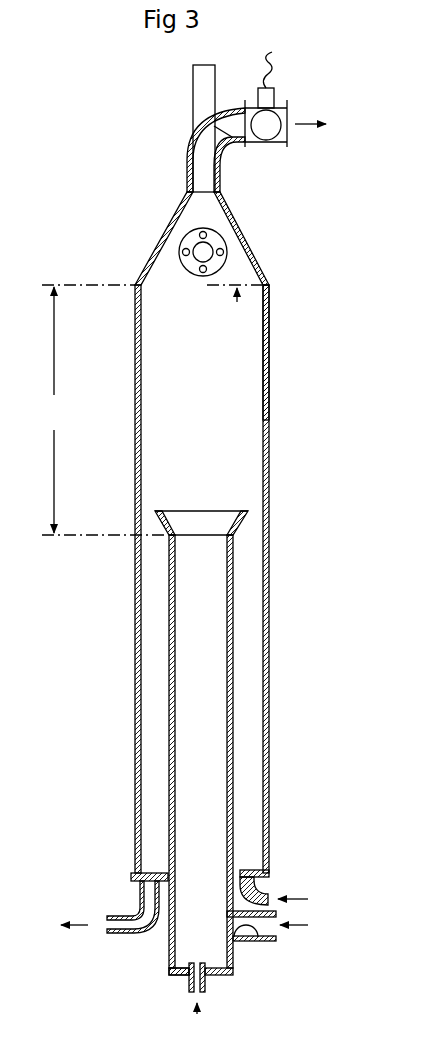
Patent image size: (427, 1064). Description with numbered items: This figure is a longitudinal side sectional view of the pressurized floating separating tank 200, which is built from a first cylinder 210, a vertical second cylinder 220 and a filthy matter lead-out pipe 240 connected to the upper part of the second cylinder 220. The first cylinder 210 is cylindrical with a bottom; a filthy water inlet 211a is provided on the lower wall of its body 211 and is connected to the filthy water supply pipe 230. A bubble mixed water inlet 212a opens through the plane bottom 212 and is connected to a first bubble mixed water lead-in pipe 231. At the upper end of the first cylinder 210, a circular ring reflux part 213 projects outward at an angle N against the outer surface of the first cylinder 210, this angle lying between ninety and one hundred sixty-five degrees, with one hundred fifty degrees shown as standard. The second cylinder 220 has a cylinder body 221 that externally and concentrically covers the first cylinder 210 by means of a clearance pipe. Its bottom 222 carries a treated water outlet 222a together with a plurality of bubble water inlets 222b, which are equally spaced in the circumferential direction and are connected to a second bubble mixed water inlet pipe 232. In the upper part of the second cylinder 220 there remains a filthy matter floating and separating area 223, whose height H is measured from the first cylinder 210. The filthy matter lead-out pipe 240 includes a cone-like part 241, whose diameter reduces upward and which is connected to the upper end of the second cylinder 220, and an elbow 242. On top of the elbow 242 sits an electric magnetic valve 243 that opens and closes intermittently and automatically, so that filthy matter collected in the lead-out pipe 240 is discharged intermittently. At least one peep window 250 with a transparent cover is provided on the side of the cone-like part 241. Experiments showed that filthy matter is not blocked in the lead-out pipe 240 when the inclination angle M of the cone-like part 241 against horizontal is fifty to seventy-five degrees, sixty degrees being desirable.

The pressurized floating separating tank 200 is at (192, 523).
The first cylinder 210 is at (194, 765).
The body 211 is at (235, 689).
The filthy water inlet 211a is at (252, 940).
The plane bottom 212 is at (160, 975).
The bubble mixed water inlet 212a is at (180, 963).
The circular ring reflux part 213 is at (244, 520).
The second cylinder 220 is at (133, 585).
The cylinder body 221 is at (270, 590).
The bottom 222 is at (235, 840).
The treated water outlet 222a is at (150, 870).
The bubble water inlets 222b is at (243, 864).
The filthy matter floating and separating area 223 is at (262, 351).
The filthy water supply pipe 230 is at (283, 960).
The first bubble mixed water lead-in pipe 231 is at (206, 986).
The second bubble mixed water inlet pipe 232 is at (270, 892).
The filthy matter lead-out pipe 240 is at (212, 227).
The cone-like part 241 is at (242, 228).
The elbow 242 is at (222, 160).
The electric magnetic valve 243 is at (270, 117).
The peep window 250 is at (177, 250).
The height H is at (52, 410).
The inclination angle M is at (244, 273).
The angle N is at (154, 519).